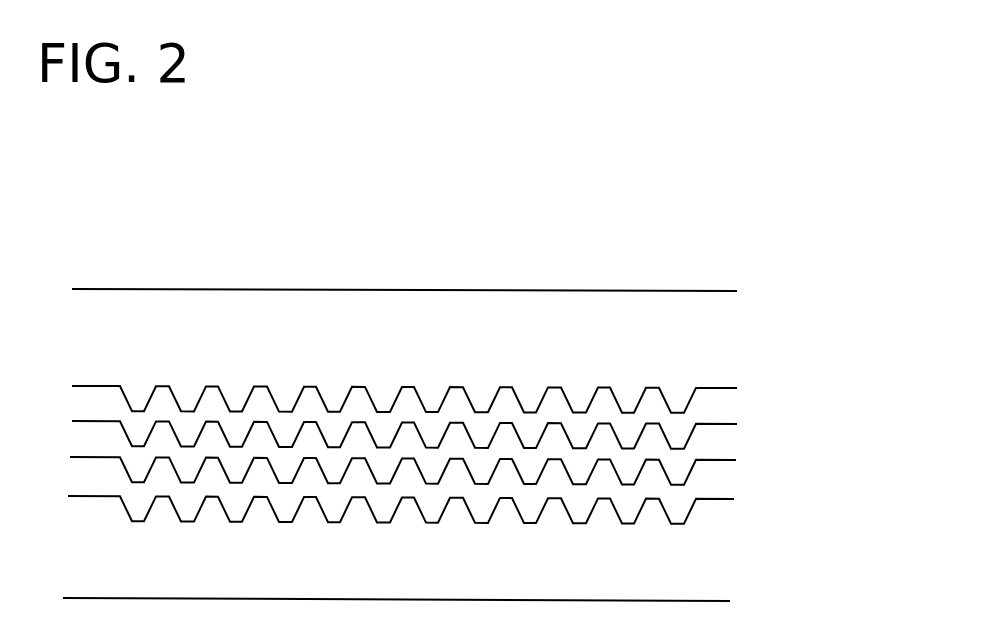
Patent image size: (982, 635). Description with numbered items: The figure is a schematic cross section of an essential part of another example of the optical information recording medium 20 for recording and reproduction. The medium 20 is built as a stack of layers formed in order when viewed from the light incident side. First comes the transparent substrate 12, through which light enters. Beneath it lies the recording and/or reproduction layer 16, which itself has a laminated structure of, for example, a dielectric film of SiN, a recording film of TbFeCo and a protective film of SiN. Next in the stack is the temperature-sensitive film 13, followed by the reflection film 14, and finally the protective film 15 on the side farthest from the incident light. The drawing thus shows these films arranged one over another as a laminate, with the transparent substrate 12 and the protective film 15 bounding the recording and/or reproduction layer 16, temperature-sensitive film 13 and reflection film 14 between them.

The optical information recording medium 20 is at (675, 192).
The transparent substrate 12 is at (728, 337).
The recording and/or reproduction layer 16 is at (727, 410).
The temperature-sensitive film 13 is at (727, 450).
The reflection film 14 is at (727, 488).
The protective film 15 is at (727, 542).